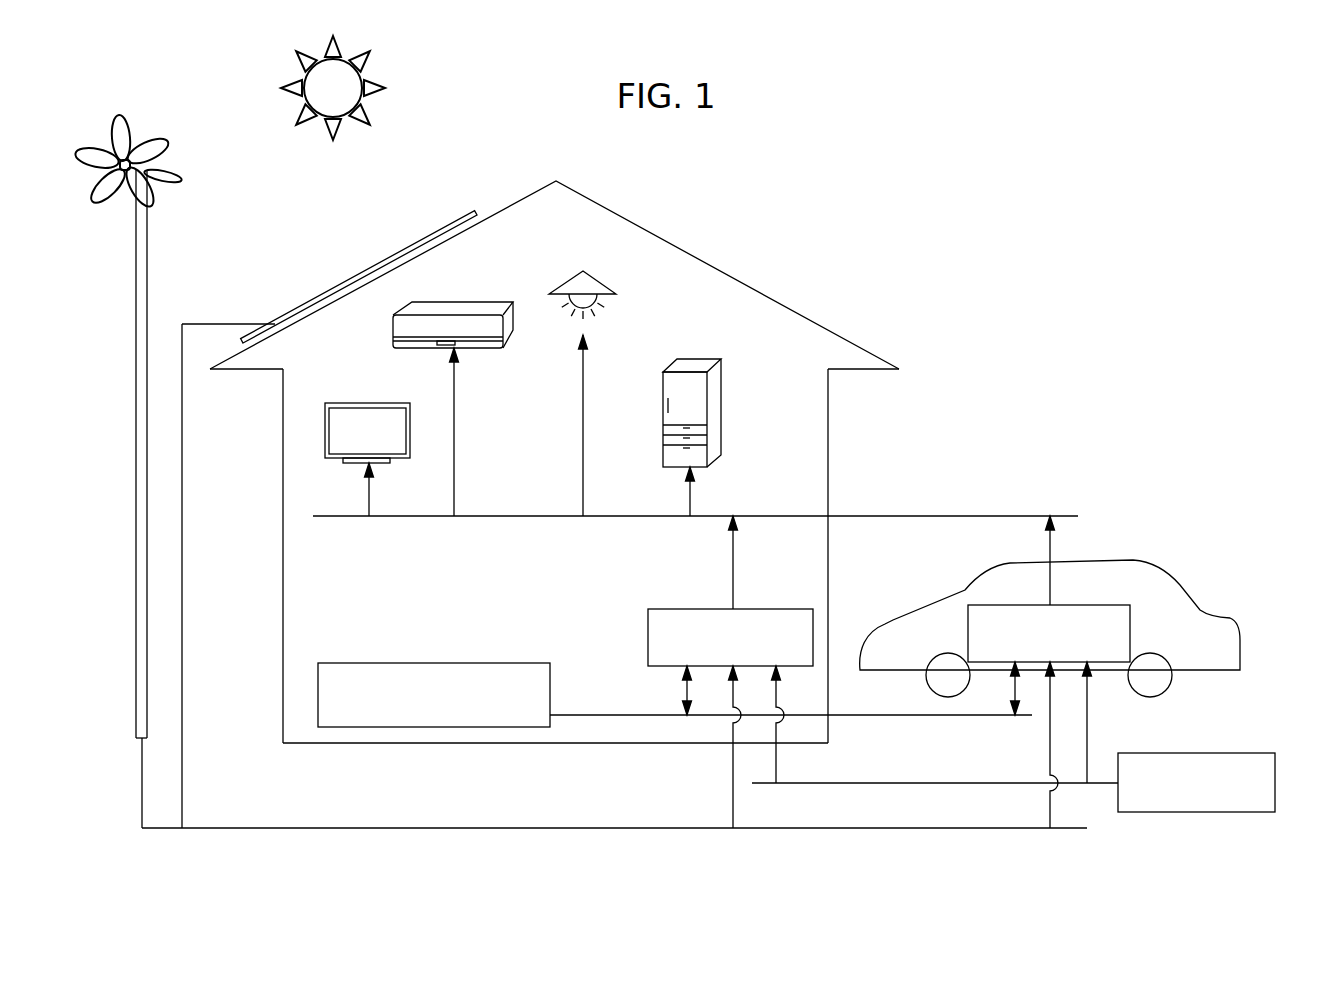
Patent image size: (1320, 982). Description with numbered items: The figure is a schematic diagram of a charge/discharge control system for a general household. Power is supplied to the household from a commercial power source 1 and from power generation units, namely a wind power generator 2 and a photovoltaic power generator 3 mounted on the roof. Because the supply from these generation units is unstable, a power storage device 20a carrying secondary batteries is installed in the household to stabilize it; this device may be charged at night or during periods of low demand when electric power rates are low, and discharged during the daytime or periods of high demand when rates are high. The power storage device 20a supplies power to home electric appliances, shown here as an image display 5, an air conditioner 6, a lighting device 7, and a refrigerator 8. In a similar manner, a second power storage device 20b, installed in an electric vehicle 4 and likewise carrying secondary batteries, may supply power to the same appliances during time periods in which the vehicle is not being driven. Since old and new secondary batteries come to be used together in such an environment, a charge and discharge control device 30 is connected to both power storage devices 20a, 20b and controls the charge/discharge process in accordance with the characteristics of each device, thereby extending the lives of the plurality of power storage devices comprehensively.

The commercial power source 1 is at (1223, 753).
The wind power generator 2 is at (160, 141).
The photovoltaic power generator 3 is at (425, 242).
The electric vehicle 4 is at (1137, 559).
The image display 5 is at (375, 403).
The air conditioner 6 is at (465, 302).
The lighting device 7 is at (598, 281).
The refrigerator 8 is at (703, 359).
The power storage device 20a is at (758, 609).
The power storage device 20b is at (1083, 605).
The charge and discharge control device 30 is at (463, 663).